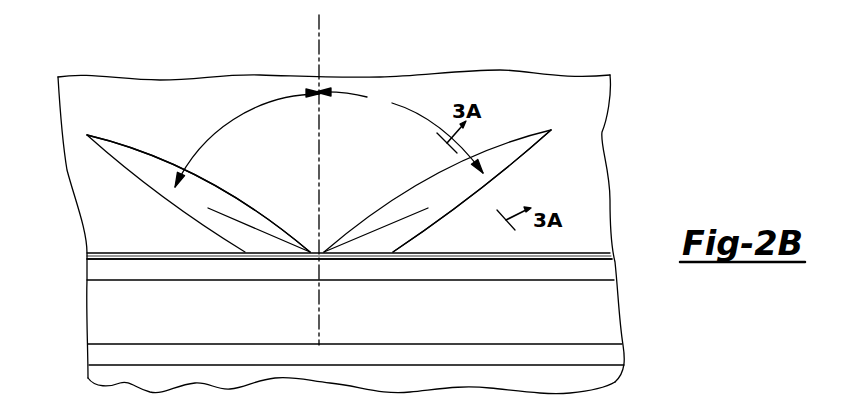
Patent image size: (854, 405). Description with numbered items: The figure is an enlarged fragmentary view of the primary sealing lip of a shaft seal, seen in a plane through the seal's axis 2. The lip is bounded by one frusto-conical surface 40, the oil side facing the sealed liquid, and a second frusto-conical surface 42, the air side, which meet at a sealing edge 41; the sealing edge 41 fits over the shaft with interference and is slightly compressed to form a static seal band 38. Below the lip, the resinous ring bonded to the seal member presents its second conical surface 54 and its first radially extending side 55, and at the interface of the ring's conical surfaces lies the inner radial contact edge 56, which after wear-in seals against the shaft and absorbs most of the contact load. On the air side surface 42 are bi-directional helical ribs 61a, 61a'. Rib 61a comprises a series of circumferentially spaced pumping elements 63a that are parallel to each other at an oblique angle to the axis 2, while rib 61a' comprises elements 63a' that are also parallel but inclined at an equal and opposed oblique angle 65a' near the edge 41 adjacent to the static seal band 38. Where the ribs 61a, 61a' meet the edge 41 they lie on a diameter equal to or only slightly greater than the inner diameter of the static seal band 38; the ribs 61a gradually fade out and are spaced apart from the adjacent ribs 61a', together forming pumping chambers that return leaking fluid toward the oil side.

The axis 2 is at (318, 49).
The static seal band 38 is at (88, 273).
The one frusto-conical surface 40 is at (612, 272).
The sealing edge 41 is at (608, 249).
The second frusto-conical surface 42 is at (600, 133).
The second conical surface 54 is at (92, 337).
The first radially extending side 55 is at (91, 363).
The inner radial contact edge 56 is at (88, 294).
The bi-directional helical rib 61a is at (437, 167).
The bi-directional helical rib 61a' is at (198, 172).
The pumping elements 63a is at (463, 191).
The pumping elements 63a' is at (198, 193).
The opposed oblique angle 65a' is at (248, 138).